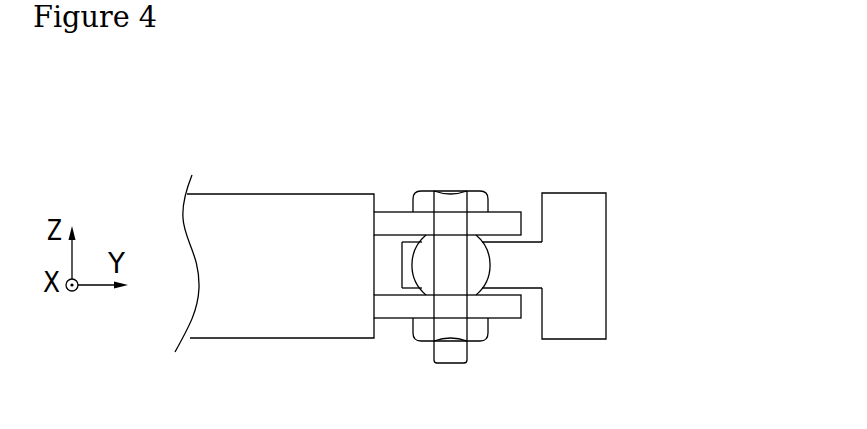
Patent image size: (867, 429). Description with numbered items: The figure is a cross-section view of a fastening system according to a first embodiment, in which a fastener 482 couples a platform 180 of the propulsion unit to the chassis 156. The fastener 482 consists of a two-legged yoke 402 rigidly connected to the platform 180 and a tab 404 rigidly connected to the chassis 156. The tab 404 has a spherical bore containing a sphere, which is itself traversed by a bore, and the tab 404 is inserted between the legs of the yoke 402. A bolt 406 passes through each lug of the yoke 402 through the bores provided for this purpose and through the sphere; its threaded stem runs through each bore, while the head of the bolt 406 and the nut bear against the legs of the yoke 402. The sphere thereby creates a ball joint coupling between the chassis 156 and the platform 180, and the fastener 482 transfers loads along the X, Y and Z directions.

The platform 180 is at (302, 273).
The two-legged yoke 402 is at (398, 219).
The tab 404 is at (528, 275).
The bolt 406 is at (445, 200).
The fastener 482 is at (594, 152).
The chassis 156 is at (582, 267).